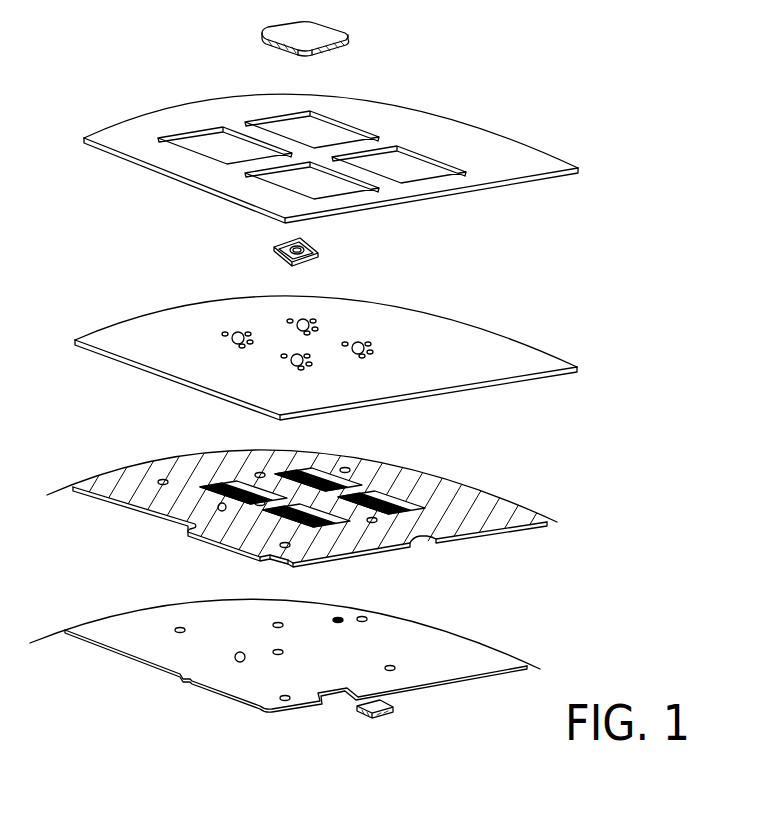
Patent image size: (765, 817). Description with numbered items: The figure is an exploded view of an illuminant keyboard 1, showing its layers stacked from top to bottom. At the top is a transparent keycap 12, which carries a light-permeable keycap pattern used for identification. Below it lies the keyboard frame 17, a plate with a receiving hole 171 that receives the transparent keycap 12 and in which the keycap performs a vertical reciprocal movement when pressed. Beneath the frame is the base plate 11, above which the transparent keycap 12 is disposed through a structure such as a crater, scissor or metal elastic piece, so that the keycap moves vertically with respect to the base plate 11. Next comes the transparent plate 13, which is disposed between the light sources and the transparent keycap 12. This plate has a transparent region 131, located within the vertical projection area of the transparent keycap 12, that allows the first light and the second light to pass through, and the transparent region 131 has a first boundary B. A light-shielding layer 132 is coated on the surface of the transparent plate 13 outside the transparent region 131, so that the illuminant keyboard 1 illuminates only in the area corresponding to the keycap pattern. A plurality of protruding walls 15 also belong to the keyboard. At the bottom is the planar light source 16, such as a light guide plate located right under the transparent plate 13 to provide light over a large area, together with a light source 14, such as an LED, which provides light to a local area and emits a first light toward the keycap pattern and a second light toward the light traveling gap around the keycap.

The illuminant keyboard 1 is at (66, 19).
The transparent keycap 12 is at (318, 34).
The keyboard frame 17 is at (331, 145).
The receiving hole 171 is at (330, 120).
The base plate 11 is at (455, 337).
The transparent plate 13 is at (310, 500).
The transparent region 131 is at (322, 470).
The light-shielding layer 132 is at (436, 485).
The protruding walls 15 is at (220, 503).
The first boundary B is at (187, 527).
The planar light source 16 is at (421, 633).
The light source 14 is at (394, 705).